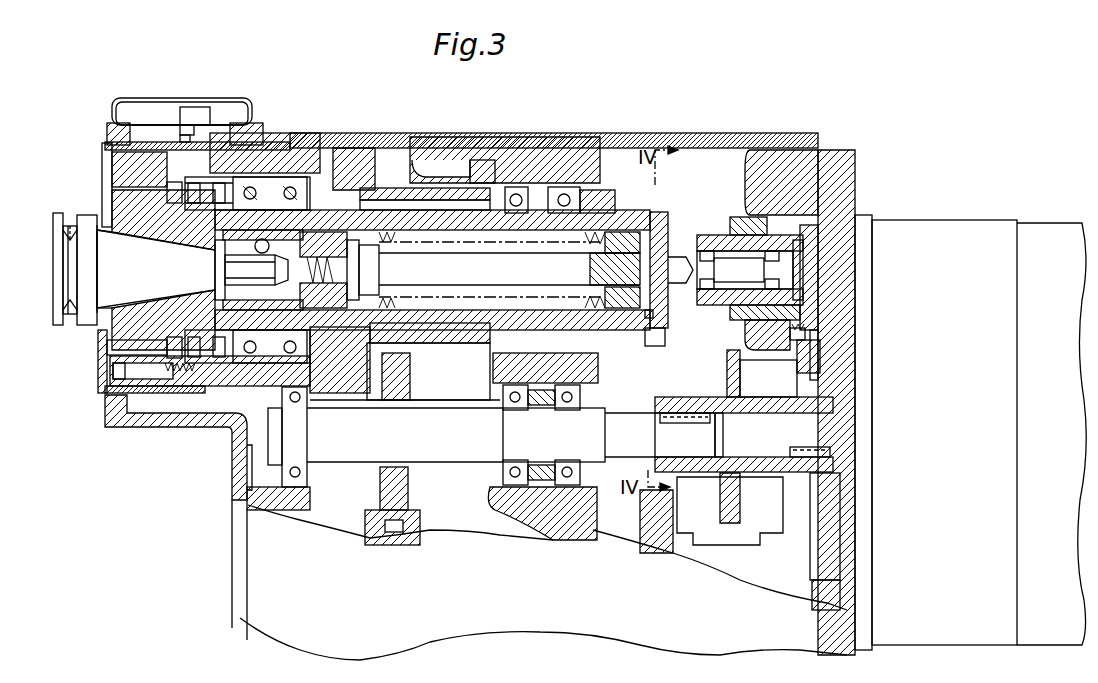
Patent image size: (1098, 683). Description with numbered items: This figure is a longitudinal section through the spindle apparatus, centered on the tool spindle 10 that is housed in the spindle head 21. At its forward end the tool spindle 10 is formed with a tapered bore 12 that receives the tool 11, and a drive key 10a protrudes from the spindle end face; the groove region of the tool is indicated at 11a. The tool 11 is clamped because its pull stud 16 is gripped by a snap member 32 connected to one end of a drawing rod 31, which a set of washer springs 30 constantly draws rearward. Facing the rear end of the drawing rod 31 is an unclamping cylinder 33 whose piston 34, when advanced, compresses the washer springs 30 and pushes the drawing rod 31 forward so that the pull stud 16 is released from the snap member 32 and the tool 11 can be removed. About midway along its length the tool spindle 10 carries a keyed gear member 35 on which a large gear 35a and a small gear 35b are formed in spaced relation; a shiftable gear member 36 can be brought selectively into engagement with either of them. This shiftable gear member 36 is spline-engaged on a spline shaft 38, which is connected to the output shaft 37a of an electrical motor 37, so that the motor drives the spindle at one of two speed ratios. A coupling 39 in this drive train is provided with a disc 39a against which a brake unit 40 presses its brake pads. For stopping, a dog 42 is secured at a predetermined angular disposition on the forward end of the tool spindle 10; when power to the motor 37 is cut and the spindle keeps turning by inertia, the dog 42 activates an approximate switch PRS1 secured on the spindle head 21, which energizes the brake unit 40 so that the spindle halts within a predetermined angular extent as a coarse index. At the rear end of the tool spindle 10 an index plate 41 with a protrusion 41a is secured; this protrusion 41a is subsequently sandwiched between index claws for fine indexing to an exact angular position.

The approximate switch PRS1 is at (200, 110).
The dog 42 is at (180, 136).
The drive key 10a is at (101, 205).
The chuck groove 11a is at (68, 226).
The tool 11 is at (52, 263).
The tapered bore 12 is at (152, 243).
The pull stud 16 is at (230, 268).
The tool spindle 10 is at (262, 190).
The snap member 32 is at (298, 210).
The large gear 35a is at (360, 150).
The gear member 35 is at (402, 190).
The small gear 35b is at (473, 185).
The spindle head 21 is at (540, 134).
The unclamping cylinder 33 is at (734, 215).
The electrical motor 37 is at (976, 232).
The index plate 41 is at (670, 228).
The drawing rod 31 is at (508, 276).
The washer springs 30 is at (597, 240).
The protrusion 41a is at (660, 330).
The piston 34 is at (730, 318).
The shiftable gear member 36 is at (410, 385).
The disc 39a is at (745, 355).
The coupling 39 is at (760, 397).
The spline shaft 38 is at (430, 440).
The output shaft 37a is at (773, 444).
The brake unit 40 is at (755, 538).